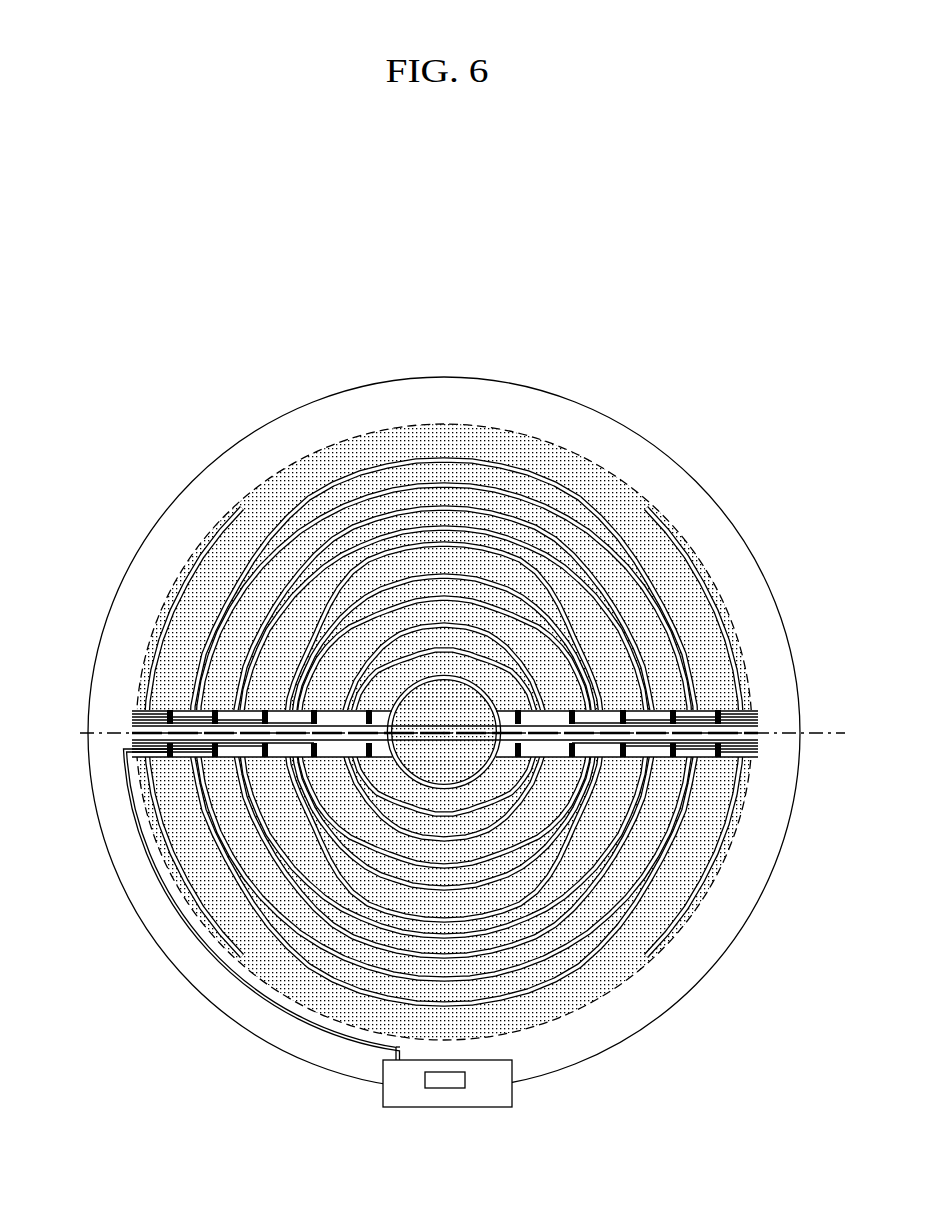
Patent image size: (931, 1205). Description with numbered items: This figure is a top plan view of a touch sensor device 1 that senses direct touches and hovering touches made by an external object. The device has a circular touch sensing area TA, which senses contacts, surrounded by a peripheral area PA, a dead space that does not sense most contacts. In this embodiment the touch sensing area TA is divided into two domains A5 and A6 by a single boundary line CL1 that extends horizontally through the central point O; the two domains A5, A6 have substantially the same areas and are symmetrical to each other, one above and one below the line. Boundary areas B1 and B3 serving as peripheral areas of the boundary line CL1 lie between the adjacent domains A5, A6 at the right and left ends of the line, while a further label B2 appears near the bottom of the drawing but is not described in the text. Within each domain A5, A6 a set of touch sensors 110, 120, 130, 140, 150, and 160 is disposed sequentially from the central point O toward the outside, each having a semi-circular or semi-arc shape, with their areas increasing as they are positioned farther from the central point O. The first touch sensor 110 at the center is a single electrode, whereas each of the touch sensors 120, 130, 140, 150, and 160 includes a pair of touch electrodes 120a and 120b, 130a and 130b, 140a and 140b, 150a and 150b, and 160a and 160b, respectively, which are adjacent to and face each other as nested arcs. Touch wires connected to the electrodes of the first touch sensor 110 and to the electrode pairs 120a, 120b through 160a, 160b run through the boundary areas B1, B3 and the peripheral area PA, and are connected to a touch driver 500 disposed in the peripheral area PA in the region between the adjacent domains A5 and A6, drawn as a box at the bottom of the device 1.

The touch sensor device 1 is at (716, 408).
The first touch sensor 110 is at (470, 753).
The touch sensor 120 is at (350, 277).
The touch electrode 120a is at (435, 640).
The touch electrode 120b is at (458, 655).
The touch sensor 130 is at (316, 232).
The touch electrode 130a is at (398, 597).
The touch electrode 130b is at (420, 620).
The touch sensor 140 is at (183, 297).
The touch electrode 140a is at (350, 568).
The touch electrode 140b is at (387, 580).
The touch sensor 150 is at (117, 378).
The touch electrode 150a is at (272, 537).
The touch electrode 150b is at (300, 550).
The touch sensor 160 is at (103, 473).
The touch electrode 160a is at (200, 583).
The touch electrode 160b is at (243, 527).
The touch driver 500 is at (483, 1108).
The domain A5 is at (445, 552).
The domain A6 is at (445, 906).
The boundary area B1 is at (757, 710).
The second boundary B2 is at (480, 1045).
The boundary area B3 is at (130, 710).
The boundary line CL1 is at (437, 737).
The central point O is at (444, 733).
The peripheral area PA is at (212, 992).
The touch sensing area TA is at (275, 990).